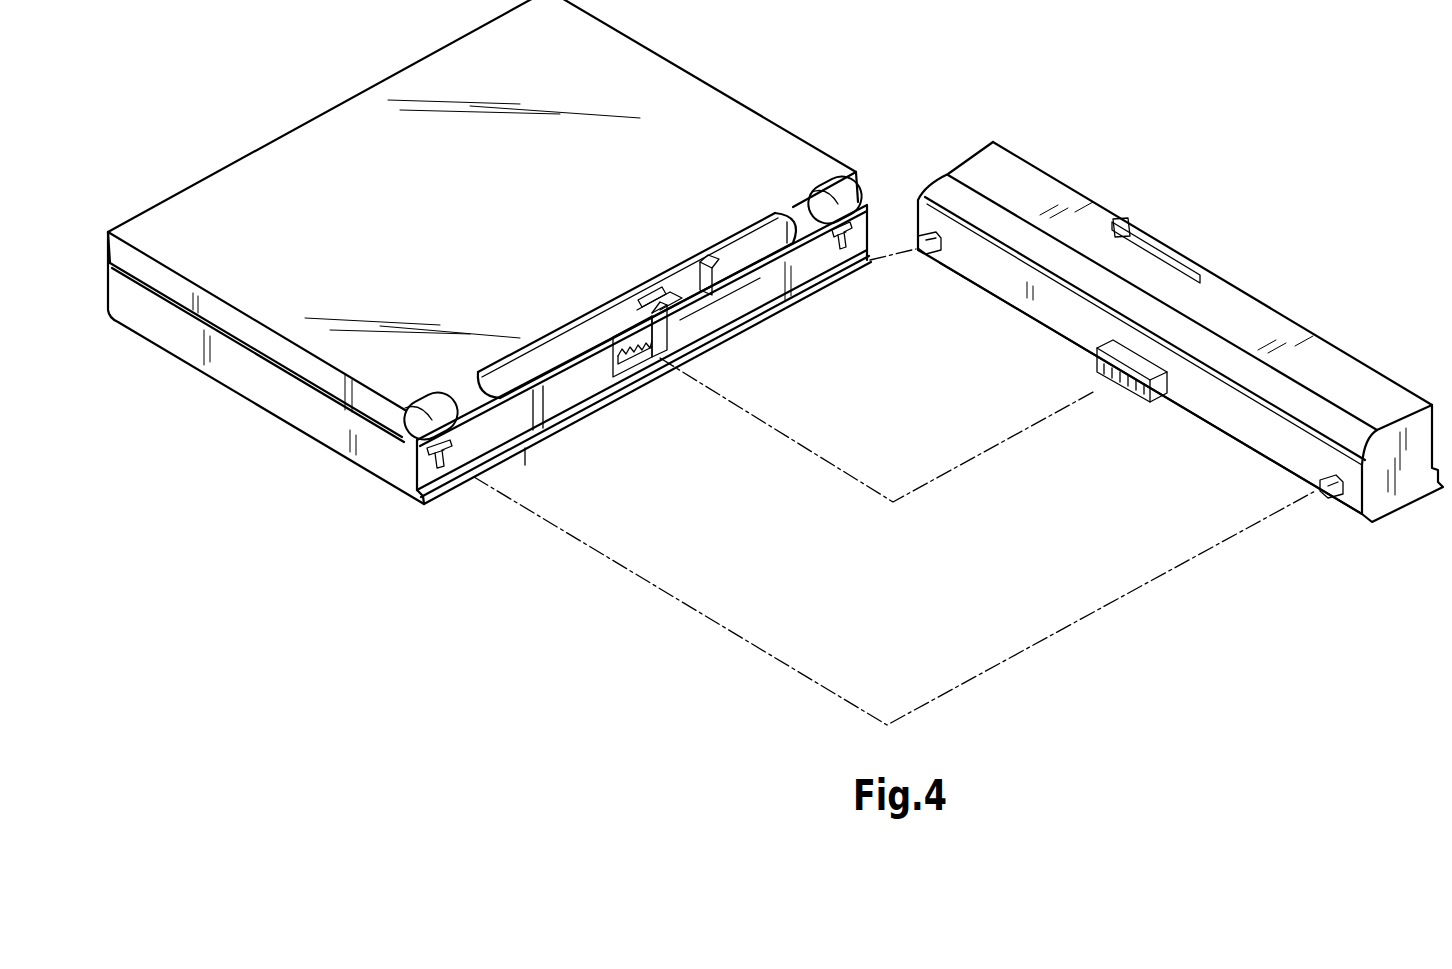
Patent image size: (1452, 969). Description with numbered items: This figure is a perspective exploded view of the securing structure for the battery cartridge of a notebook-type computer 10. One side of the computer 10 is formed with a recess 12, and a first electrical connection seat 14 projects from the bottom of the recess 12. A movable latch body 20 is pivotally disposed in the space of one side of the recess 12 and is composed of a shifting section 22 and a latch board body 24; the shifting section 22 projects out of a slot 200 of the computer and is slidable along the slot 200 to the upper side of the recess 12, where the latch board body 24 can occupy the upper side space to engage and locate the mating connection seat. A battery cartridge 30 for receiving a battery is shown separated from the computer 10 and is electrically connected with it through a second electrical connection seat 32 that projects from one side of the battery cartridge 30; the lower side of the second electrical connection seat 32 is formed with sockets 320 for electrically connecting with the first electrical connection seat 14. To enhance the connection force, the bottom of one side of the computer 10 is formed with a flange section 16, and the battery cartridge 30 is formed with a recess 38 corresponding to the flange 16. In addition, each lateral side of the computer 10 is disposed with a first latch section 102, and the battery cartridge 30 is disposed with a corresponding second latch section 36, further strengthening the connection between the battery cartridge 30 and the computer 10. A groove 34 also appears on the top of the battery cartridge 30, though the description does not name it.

The notebook-type computer 10 is at (790, 167).
The first latch section 102 is at (860, 220).
The recess 12 is at (613, 357).
The first electrical connection seat 14 is at (633, 353).
The flange section 16 is at (533, 430).
The movable latch body 20 is at (757, 312).
The slot 200 is at (655, 295).
The shifting section 22 is at (713, 250).
The latch board body 24 is at (687, 313).
The battery cartridge 30 is at (1260, 328).
The second electrical connection seat 32 is at (1135, 387).
The sockets 320 is at (1114, 376).
The guide groove 34 is at (1125, 228).
The second latch section 36 is at (928, 252).
The recess 38 is at (1365, 512).